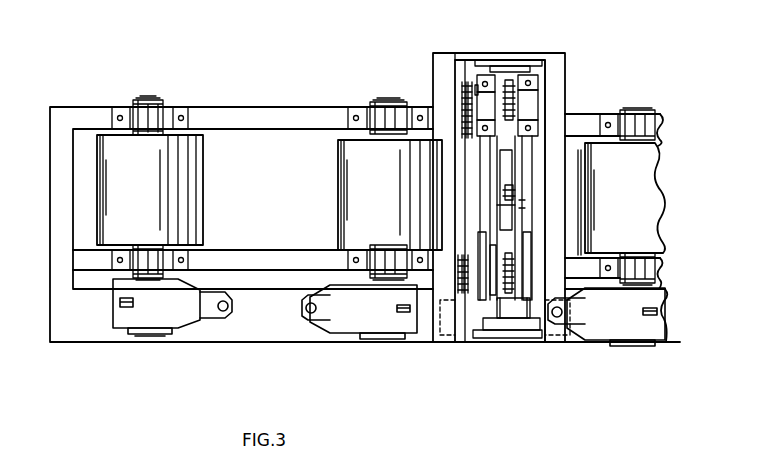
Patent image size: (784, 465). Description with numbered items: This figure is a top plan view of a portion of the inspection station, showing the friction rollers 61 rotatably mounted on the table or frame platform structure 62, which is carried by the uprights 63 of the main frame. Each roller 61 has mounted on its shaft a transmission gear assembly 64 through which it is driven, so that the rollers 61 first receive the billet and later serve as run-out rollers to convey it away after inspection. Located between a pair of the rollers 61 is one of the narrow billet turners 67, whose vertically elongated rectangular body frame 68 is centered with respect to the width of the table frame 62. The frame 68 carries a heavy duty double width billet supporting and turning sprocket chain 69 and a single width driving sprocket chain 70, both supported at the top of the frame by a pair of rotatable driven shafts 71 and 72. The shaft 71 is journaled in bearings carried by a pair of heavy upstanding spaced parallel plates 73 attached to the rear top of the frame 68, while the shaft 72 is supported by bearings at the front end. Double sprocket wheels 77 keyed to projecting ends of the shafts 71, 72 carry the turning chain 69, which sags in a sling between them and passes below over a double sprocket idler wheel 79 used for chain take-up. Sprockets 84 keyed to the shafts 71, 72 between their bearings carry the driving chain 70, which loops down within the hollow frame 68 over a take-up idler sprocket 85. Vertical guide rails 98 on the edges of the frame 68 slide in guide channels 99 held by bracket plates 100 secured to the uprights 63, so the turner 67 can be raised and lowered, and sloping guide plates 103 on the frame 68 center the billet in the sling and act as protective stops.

The friction rollers 61 is at (190, 190).
The table or frame platform structure 62 is at (290, 108).
The uprights 63 is at (578, 342).
The transmission gear assembly 64 is at (170, 320).
The billet turners 67 is at (468, 60).
The frame 68 is at (565, 180).
The billet supporting and turning sprocket chain 69 is at (497, 160).
The driving sprocket chain 70 is at (515, 205).
The shaft 71 is at (514, 307).
The shaft 72 is at (538, 88).
The plates 73 is at (478, 245).
The double sprocket wheels 77 is at (462, 92).
The double sprocket idler wheel 79 is at (462, 128).
The sprockets 84 is at (515, 98).
The take-up idler sprocket 85 is at (515, 195).
The guide rails 98 is at (512, 66).
The guide channels 99 is at (490, 64).
The bracket plates 100 is at (477, 58).
The guide plates 103 is at (500, 176).